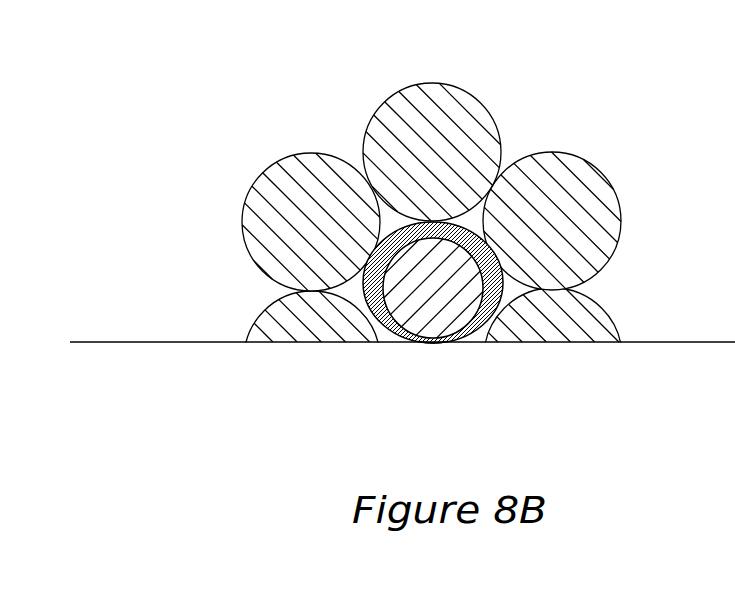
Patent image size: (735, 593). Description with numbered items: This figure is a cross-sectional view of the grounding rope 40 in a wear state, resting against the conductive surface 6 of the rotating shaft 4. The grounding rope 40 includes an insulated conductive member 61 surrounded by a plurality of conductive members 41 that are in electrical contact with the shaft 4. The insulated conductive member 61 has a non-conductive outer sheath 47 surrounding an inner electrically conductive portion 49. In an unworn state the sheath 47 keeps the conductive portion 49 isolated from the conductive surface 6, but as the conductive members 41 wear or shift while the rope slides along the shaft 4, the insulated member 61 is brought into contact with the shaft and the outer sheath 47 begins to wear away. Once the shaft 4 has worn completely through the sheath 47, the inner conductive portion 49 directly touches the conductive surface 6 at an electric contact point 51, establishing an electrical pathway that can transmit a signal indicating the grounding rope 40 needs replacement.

The grounding rope 40 is at (439, 226).
The conductive members 41 is at (268, 188).
The insulated conductive member 61 is at (366, 182).
The shaft 4 is at (436, 312).
The non-conductive outer sheath 47 is at (498, 284).
The inner electrically conductive portion 49 is at (400, 288).
The electric contact point 51 is at (432, 343).
The conductive surface 6 is at (90, 342).